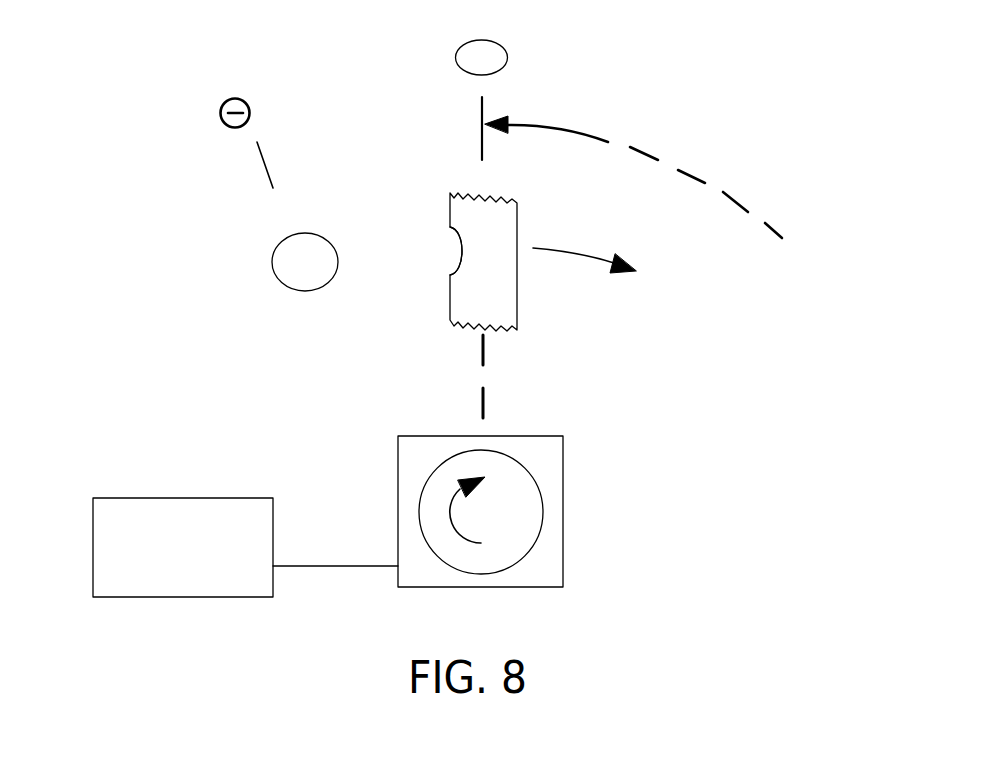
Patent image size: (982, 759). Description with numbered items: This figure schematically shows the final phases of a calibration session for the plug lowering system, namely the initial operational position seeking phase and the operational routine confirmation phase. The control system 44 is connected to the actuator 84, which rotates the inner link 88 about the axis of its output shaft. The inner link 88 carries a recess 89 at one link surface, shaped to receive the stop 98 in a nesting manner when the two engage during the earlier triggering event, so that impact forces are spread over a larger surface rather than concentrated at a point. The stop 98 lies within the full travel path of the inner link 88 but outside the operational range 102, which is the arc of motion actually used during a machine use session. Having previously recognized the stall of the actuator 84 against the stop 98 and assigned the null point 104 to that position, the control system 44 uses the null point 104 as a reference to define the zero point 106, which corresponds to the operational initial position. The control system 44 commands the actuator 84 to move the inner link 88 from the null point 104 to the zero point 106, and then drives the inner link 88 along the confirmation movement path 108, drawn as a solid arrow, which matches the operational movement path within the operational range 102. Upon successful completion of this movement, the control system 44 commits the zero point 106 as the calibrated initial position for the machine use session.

The control system 44 is at (202, 559).
The actuator 84 is at (553, 560).
The inner link 88 is at (517, 312).
The recess 89 is at (458, 268).
The stop 98 is at (290, 258).
The operational range 102 is at (697, 175).
The null point 104 is at (217, 83).
The zero point 106 is at (498, 53).
The confirmation movement path 108 is at (582, 253).